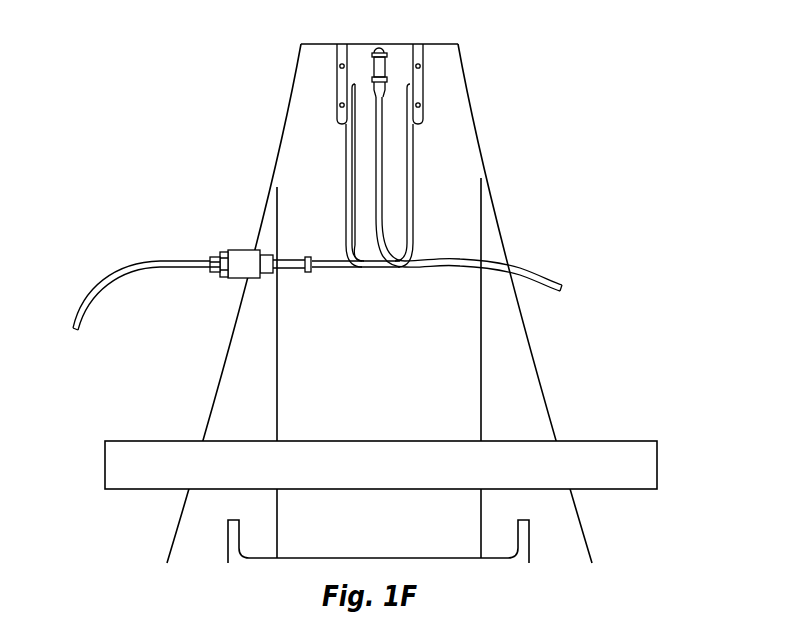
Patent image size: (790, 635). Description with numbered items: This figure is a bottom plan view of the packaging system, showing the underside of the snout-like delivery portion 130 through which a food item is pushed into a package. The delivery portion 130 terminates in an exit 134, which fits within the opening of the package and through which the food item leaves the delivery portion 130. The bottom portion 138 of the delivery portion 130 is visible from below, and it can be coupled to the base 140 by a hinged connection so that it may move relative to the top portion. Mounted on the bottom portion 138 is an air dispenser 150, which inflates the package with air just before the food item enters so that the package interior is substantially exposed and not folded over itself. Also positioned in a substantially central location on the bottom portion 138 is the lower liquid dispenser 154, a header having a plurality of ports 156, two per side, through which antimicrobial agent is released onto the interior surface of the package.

The delivery portion 130 is at (241, 188).
The exit 134 is at (312, 44).
The bottom portion 138 is at (442, 155).
The base 140 is at (125, 467).
The air dispenser 150 is at (374, 58).
The lower liquid dispenser 154 is at (337, 96).
The ports 156 is at (420, 63).